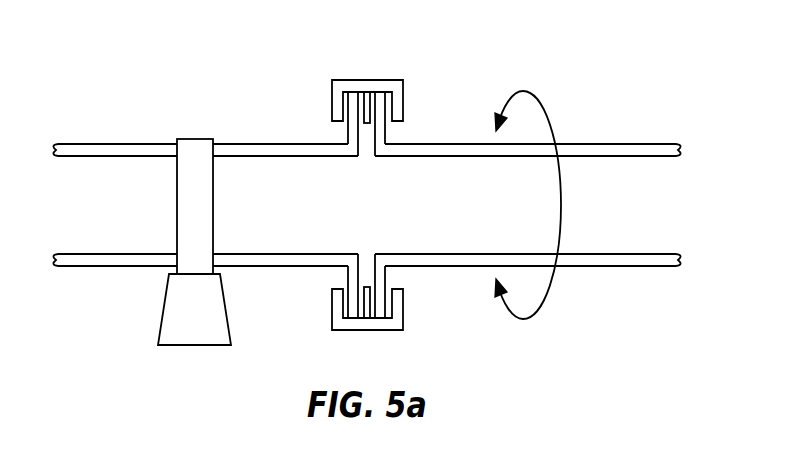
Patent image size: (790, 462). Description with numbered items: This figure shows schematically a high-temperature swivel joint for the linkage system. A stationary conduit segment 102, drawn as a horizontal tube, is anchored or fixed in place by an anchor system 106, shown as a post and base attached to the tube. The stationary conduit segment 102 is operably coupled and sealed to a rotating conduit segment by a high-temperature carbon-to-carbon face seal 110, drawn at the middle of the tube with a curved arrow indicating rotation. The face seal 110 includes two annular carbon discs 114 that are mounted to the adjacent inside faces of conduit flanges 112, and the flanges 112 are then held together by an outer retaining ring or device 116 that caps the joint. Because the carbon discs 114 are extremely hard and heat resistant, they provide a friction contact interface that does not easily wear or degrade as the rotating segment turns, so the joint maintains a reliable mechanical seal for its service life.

The stationary conduit segment 102 is at (117, 143).
The anchor system 106 is at (162, 295).
The high-temperature carbon-to-carbon face seal 110 is at (358, 165).
The conduit flanges 112 is at (380, 125).
The annular carbon discs 114 is at (372, 101).
The outer retaining ring 116 is at (337, 97).